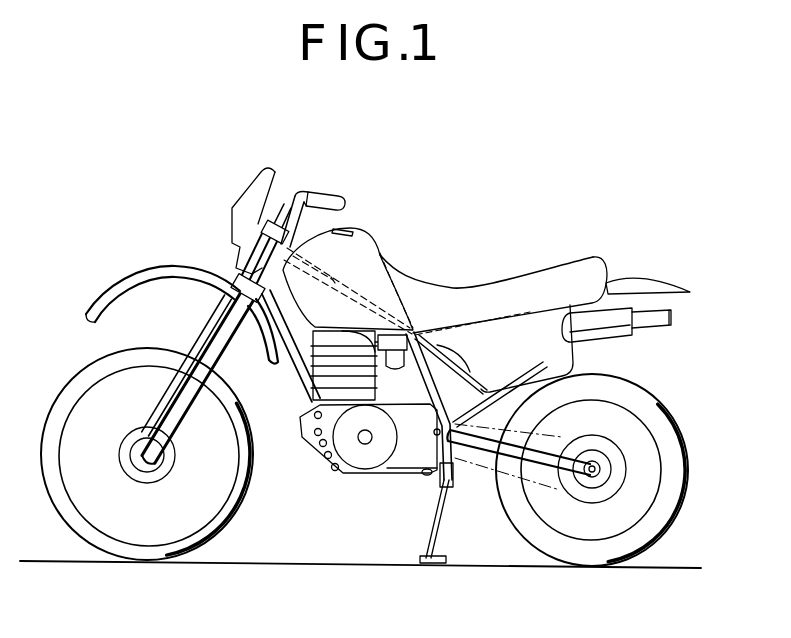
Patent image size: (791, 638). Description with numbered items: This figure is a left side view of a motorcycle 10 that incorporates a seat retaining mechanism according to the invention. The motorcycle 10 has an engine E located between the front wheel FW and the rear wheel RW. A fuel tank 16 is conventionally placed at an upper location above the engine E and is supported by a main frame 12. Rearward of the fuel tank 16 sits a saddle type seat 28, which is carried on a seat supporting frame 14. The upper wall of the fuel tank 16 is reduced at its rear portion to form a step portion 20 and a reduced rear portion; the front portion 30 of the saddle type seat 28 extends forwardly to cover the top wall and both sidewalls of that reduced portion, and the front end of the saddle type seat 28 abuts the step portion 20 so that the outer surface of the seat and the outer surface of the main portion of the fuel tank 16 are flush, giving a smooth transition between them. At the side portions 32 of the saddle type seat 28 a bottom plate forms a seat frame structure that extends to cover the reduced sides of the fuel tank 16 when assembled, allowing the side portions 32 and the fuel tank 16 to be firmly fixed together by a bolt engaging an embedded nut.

The motorcycle 10 is at (472, 203).
The main frame 12 is at (372, 253).
The seat supporting frame 14 is at (527, 313).
The fuel tank 16 is at (343, 230).
The step portion 20 is at (387, 251).
The saddle type seat 28 is at (485, 285).
The front portion 30 is at (413, 280).
The side portions 32 is at (382, 376).
The engine E is at (358, 458).
The front wheel FW is at (236, 517).
The rear wheel RW is at (520, 533).